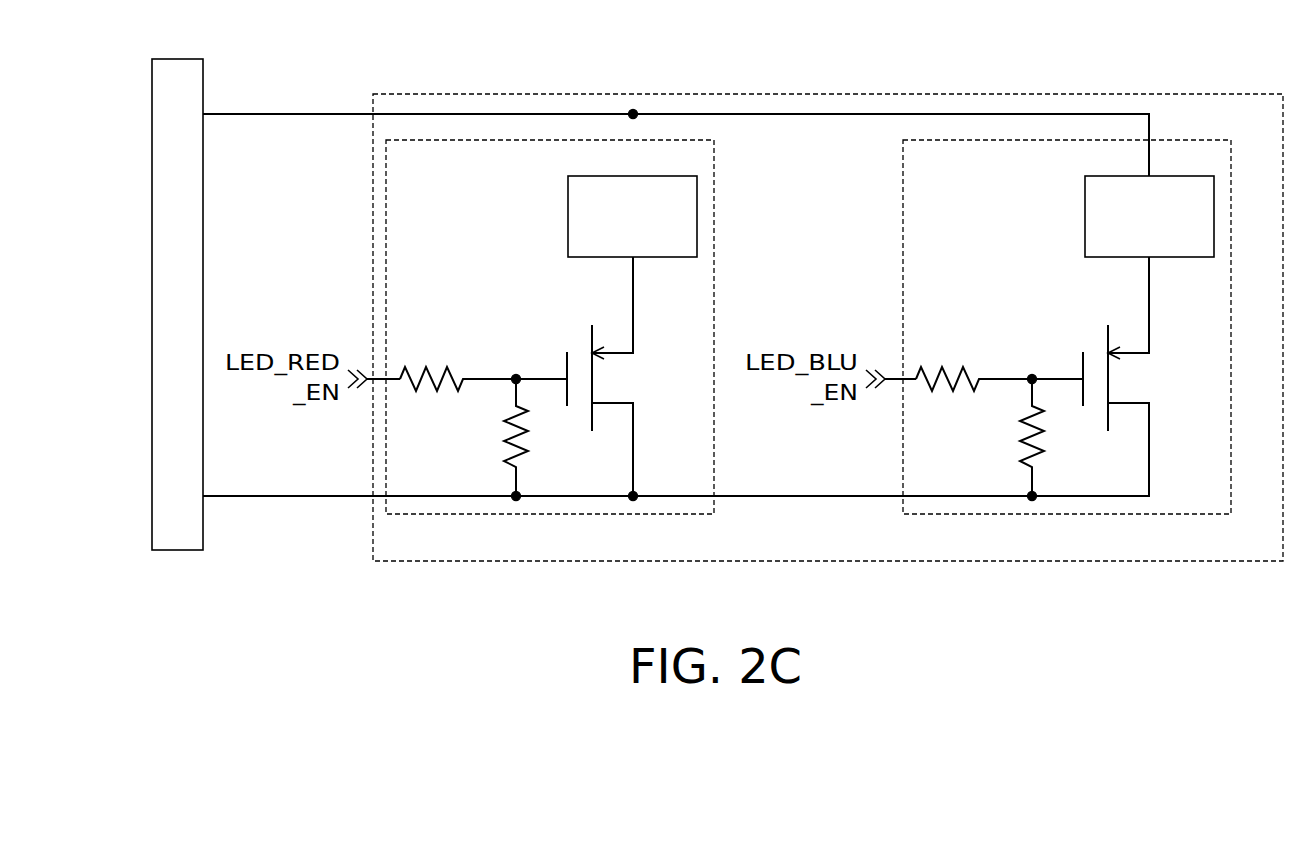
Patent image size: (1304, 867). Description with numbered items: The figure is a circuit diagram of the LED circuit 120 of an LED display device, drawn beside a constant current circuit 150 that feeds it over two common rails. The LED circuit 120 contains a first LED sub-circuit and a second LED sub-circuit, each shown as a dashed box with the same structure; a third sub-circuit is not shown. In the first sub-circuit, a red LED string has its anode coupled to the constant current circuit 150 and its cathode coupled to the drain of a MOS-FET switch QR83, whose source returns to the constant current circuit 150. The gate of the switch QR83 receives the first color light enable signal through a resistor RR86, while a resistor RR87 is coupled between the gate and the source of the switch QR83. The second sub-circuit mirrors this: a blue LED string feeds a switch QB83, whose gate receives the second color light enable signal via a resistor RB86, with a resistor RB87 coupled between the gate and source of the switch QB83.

The constant current circuit 150 is at (177, 550).
The LED circuit 120 is at (1228, 561).
The resistor RR86 is at (483, 362).
The resistor RR87 is at (480, 437).
The switch QR83 is at (634, 376).
The resistor RB86 is at (999, 362).
The resistor RB87 is at (997, 437).
The switch QB83 is at (1150, 376).